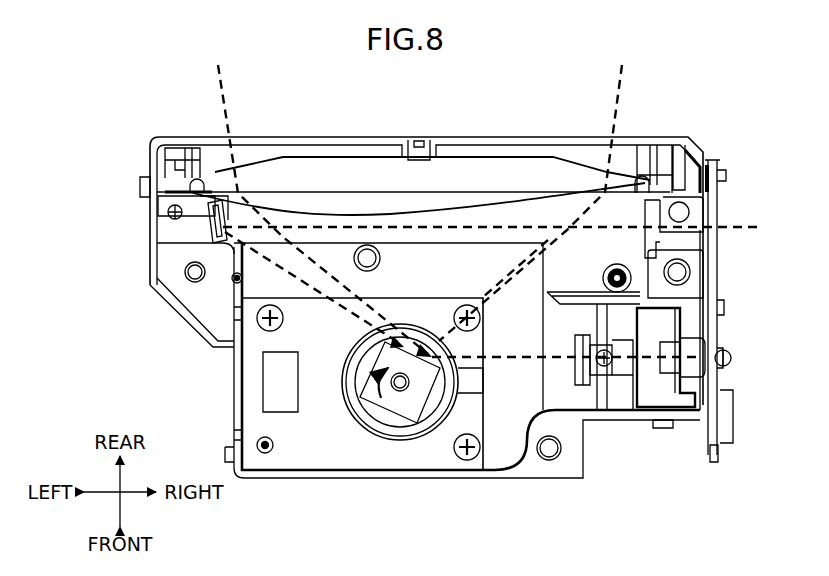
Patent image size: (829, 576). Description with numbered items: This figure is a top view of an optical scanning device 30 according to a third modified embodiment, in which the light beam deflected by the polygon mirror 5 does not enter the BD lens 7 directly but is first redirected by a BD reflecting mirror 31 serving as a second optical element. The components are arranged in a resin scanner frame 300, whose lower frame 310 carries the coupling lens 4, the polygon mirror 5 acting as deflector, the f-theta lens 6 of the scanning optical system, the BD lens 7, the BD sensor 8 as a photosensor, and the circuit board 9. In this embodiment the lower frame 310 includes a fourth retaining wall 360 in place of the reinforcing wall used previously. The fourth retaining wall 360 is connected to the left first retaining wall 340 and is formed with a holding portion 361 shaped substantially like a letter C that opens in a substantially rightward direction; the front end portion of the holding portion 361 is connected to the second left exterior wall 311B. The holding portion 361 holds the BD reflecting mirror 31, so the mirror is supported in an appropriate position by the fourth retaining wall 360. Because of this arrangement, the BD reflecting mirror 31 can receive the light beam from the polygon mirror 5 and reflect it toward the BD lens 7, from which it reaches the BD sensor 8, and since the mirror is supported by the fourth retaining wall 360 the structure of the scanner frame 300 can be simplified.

The optical scanning device 30 is at (702, 92).
The lower frame 310 is at (421, 232).
The scanner frame 300 is at (496, 132).
The f-theta lens 6 is at (375, 168).
The BD reflecting mirror 31 is at (222, 232).
The left first retaining wall 340 is at (166, 205).
The holding portion 361 is at (133, 240).
The fourth retaining wall 360 is at (212, 232).
The second left exterior wall 311B is at (188, 247).
The polygon mirror 5 is at (398, 405).
The coupling lens 4 is at (610, 362).
The BD sensor 8 is at (721, 222).
The BD lens 7 is at (653, 243).
The circuit board 9 is at (717, 291).